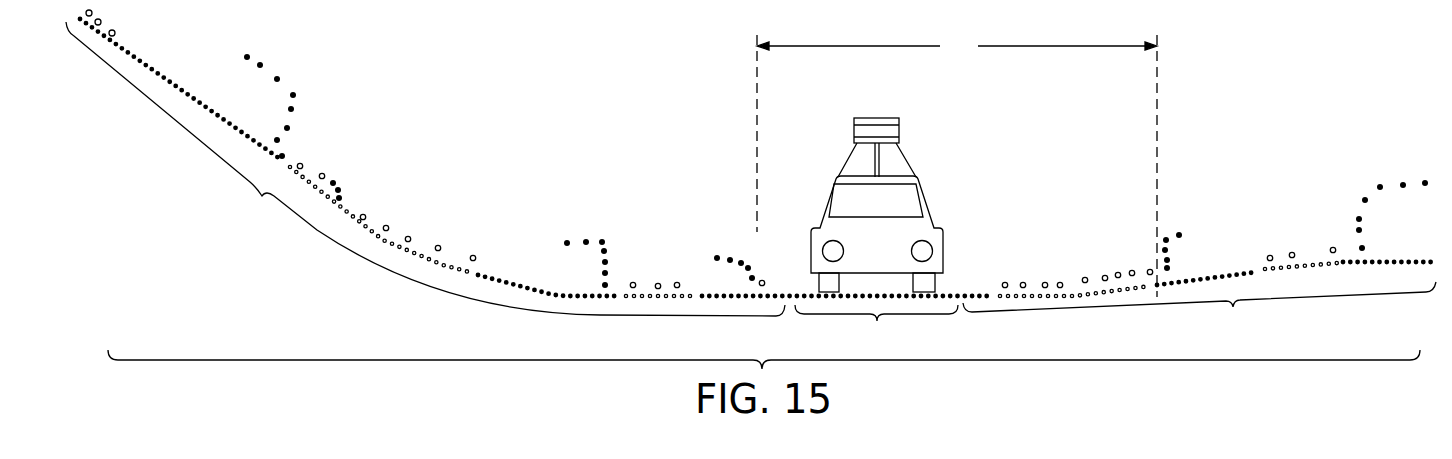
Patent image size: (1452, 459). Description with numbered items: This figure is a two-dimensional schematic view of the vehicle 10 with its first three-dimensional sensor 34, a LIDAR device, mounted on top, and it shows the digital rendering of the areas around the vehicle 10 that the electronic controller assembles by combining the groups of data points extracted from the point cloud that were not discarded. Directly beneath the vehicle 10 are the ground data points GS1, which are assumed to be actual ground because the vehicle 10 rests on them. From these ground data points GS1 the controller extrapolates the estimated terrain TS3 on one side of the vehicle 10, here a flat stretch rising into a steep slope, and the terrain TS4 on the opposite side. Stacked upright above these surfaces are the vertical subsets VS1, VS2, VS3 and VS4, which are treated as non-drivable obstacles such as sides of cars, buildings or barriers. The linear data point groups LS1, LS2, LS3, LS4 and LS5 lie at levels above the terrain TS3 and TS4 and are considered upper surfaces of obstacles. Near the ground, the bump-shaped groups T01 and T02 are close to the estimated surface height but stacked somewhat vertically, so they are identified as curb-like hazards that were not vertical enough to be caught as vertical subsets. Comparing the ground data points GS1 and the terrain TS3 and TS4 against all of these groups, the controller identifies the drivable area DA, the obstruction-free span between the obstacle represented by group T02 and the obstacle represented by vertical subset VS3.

The vehicle 10 is at (897, 230).
The first 3D sensor 34 is at (872, 131).
The drivable area DA is at (957, 164).
The linear data point group LS1 is at (290, 81).
The vertical subset VS1 is at (303, 90).
The outlier data point group T01 is at (343, 177).
The terrain TS3 is at (425, 169).
The linear data point group LS2 is at (596, 238).
The vertical subset VS2 is at (609, 232).
The linear data point group LS3 is at (740, 260).
The outlier data point group T02 is at (765, 285).
The ground data points GS1 is at (876, 329).
The terrain TS4 is at (1199, 310).
The linear data point group LS4 is at (1179, 234).
The vertical subset VS3 is at (1178, 238).
The linear data point group LS5 is at (1434, 180).
The vertical subset VS4 is at (1375, 193).